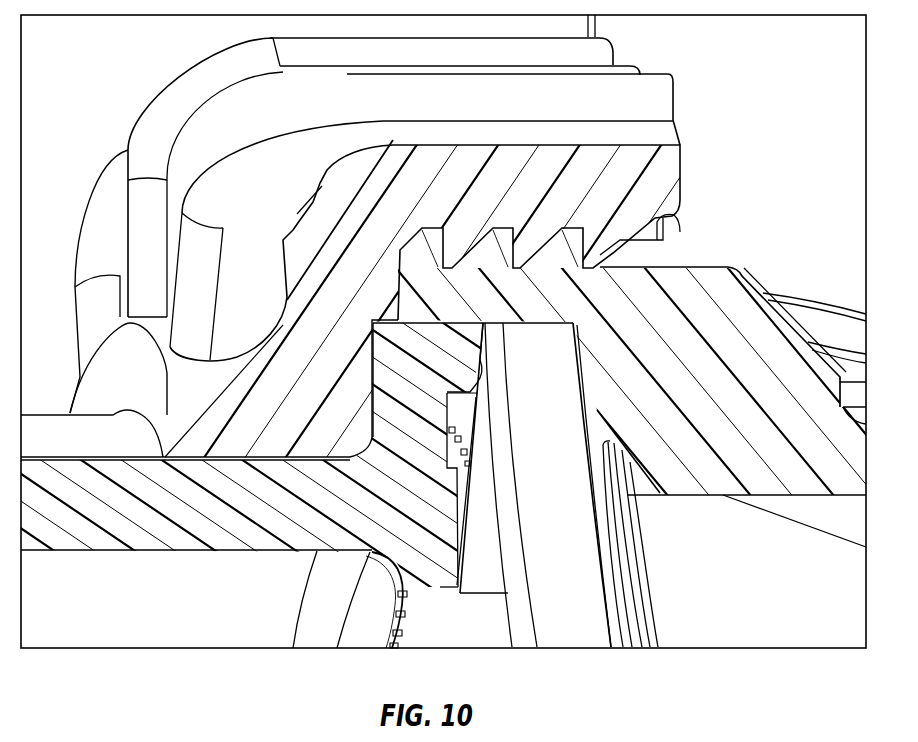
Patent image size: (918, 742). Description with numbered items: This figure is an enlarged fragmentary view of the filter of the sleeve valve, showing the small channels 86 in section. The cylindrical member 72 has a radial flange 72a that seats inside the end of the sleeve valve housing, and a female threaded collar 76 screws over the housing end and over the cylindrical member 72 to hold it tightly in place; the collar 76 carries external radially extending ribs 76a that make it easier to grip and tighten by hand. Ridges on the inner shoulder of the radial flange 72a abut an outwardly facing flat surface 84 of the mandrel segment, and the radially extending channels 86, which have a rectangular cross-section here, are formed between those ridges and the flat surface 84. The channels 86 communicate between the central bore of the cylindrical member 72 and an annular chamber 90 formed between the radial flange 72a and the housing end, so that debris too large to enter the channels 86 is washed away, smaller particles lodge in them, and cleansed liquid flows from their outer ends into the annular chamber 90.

The cylindrical member 72 is at (212, 528).
The radial flange 72a is at (447, 567).
The female threaded collar 76 is at (522, 198).
The external radially extending ribs 76a is at (658, 100).
The flat surface 84 is at (465, 453).
The channels 86 is at (447, 454).
The annular chamber 90 is at (447, 416).